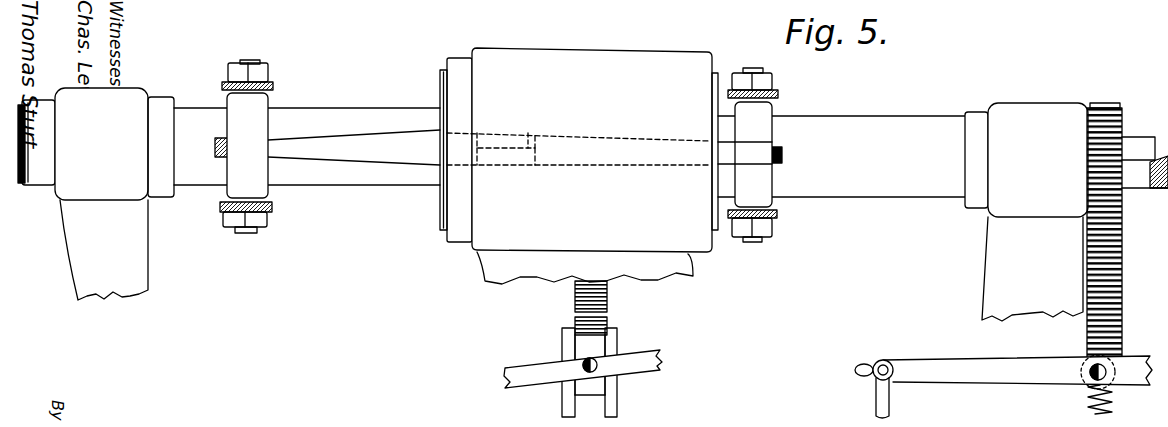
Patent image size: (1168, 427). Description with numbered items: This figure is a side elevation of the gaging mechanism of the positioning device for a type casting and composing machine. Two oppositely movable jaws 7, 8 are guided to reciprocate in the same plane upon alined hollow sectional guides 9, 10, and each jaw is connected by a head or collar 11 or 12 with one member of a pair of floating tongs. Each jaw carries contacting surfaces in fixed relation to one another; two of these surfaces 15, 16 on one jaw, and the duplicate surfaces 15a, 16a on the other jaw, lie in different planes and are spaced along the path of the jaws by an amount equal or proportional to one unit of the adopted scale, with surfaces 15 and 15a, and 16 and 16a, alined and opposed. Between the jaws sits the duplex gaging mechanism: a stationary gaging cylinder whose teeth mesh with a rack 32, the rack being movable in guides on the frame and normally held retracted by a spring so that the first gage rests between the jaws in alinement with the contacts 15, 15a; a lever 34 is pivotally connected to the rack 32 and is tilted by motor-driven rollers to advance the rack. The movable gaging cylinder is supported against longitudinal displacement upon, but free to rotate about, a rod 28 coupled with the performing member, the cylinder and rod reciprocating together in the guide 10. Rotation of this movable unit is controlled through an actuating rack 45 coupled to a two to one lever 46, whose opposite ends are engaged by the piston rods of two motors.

The jaw 7 is at (498, 147).
The jaw 8 is at (727, 157).
The hollow sectional guide 9 is at (318, 124).
The hollow sectional guide 10 is at (569, 152).
The head or collar 11 is at (263, 107).
The head or collar 12 is at (767, 112).
The contacting surface 15 is at (480, 133).
The contacting surface 15a is at (530, 133).
The contacting surface 16 is at (472, 160).
The contacting surface 16a is at (527, 165).
The rod 28 is at (1150, 188).
The rack 32 is at (607, 303).
The lever 34 is at (661, 357).
The actuating rack 45 is at (1121, 278).
The two to one lever 46 is at (1022, 378).